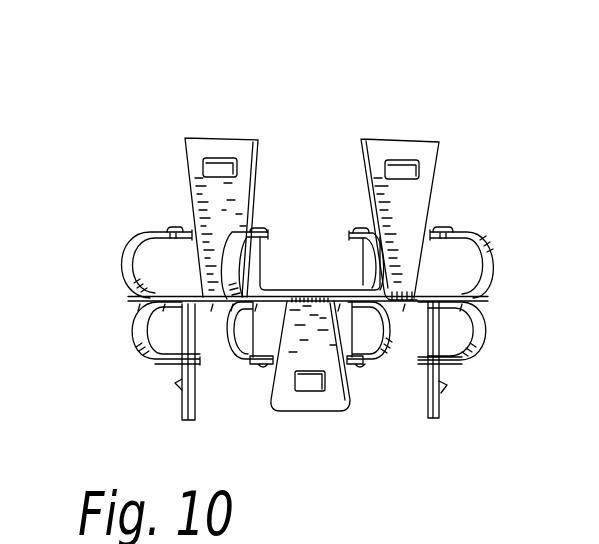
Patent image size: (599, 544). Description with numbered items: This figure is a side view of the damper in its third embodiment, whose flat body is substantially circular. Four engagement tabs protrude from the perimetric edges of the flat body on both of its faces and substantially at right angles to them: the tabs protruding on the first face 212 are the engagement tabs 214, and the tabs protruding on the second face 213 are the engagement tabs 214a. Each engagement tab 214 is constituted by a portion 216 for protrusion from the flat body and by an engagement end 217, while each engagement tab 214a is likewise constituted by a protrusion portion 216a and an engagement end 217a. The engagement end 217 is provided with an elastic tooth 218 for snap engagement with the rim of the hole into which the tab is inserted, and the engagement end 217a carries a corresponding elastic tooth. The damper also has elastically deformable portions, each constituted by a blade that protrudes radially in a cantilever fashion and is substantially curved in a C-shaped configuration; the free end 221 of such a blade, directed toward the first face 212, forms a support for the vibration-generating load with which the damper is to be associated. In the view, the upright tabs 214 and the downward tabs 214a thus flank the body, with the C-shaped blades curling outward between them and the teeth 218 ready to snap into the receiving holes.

The first face 212 is at (293, 290).
The second face 213 is at (208, 307).
The engagement tab 214 is at (212, 128).
The engagement tab 214a is at (452, 408).
The protrusion portion 216 is at (210, 200).
The protrusion portion 216a is at (436, 335).
The engagement end 217 is at (228, 147).
The engagement end 217a is at (312, 392).
The elastic tooth 218 is at (217, 163).
The free end 221 is at (178, 232).